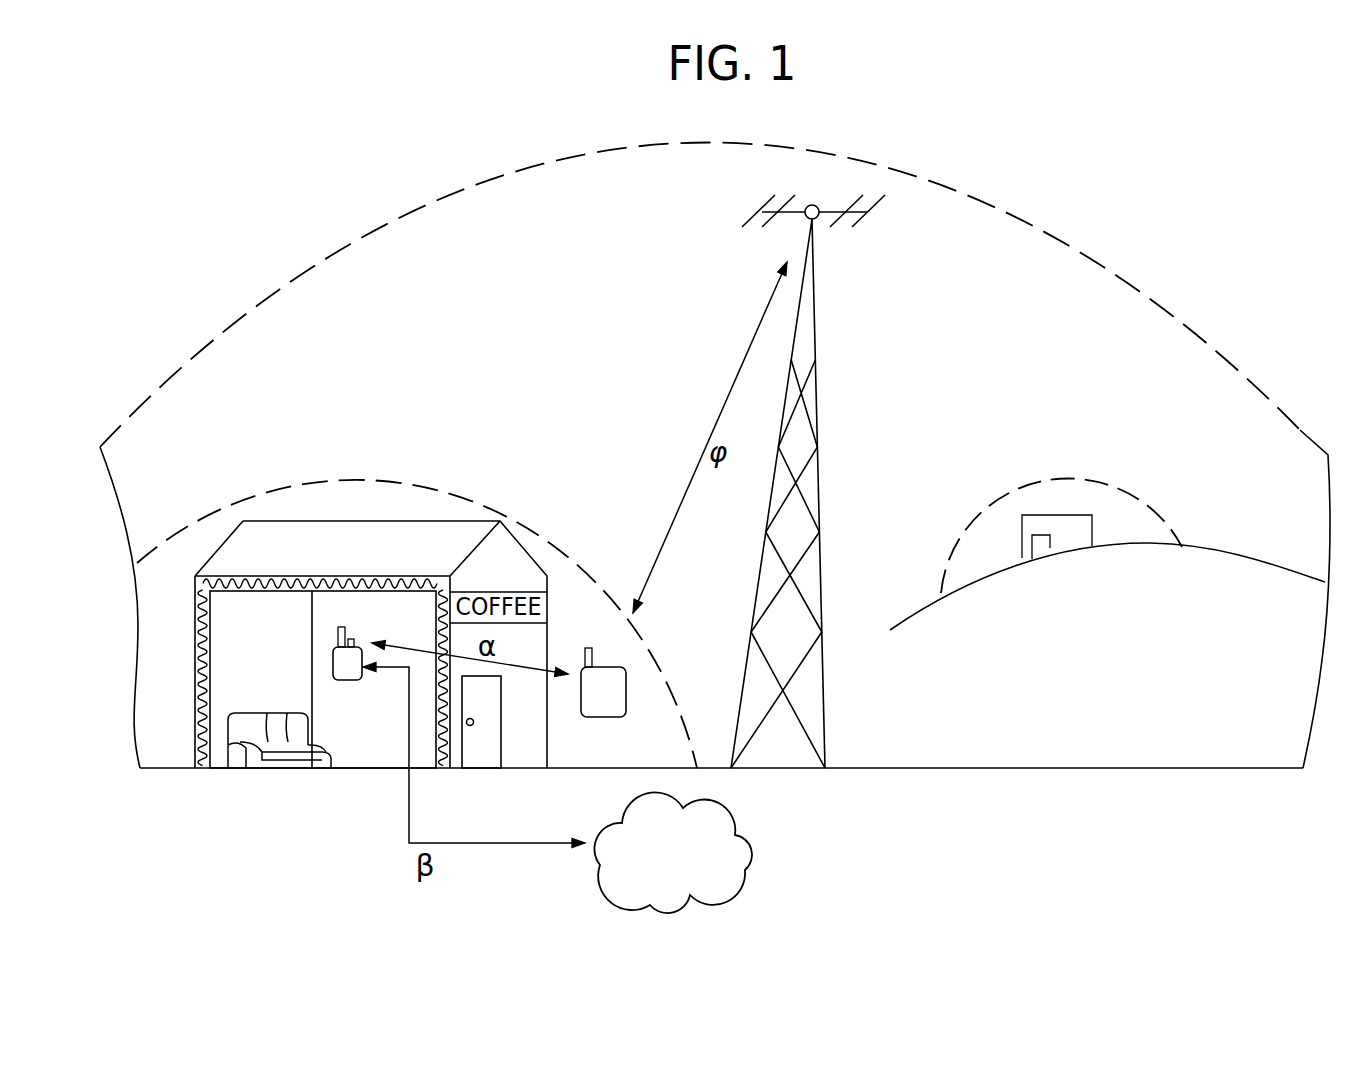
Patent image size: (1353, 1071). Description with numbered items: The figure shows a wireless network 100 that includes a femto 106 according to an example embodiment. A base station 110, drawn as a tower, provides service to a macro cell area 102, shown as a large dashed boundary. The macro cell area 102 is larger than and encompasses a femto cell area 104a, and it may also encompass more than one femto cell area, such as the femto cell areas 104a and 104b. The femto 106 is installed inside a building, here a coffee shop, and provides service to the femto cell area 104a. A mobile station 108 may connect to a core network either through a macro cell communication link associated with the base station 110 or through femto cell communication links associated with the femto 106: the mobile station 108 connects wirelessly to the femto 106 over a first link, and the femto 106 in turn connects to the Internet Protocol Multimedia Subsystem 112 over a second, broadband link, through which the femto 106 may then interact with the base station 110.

The wireless communication system 100 is at (1107, 148).
The macro cell area 102 is at (1175, 303).
The femto cell area 104a is at (378, 466).
The femto cell area 104b is at (1148, 494).
The femto 106 is at (348, 686).
The mobile station 108 is at (593, 717).
The base station 110 is at (782, 772).
The Internet Protocol Multimedia Subsystem (IMS) 112 is at (753, 857).